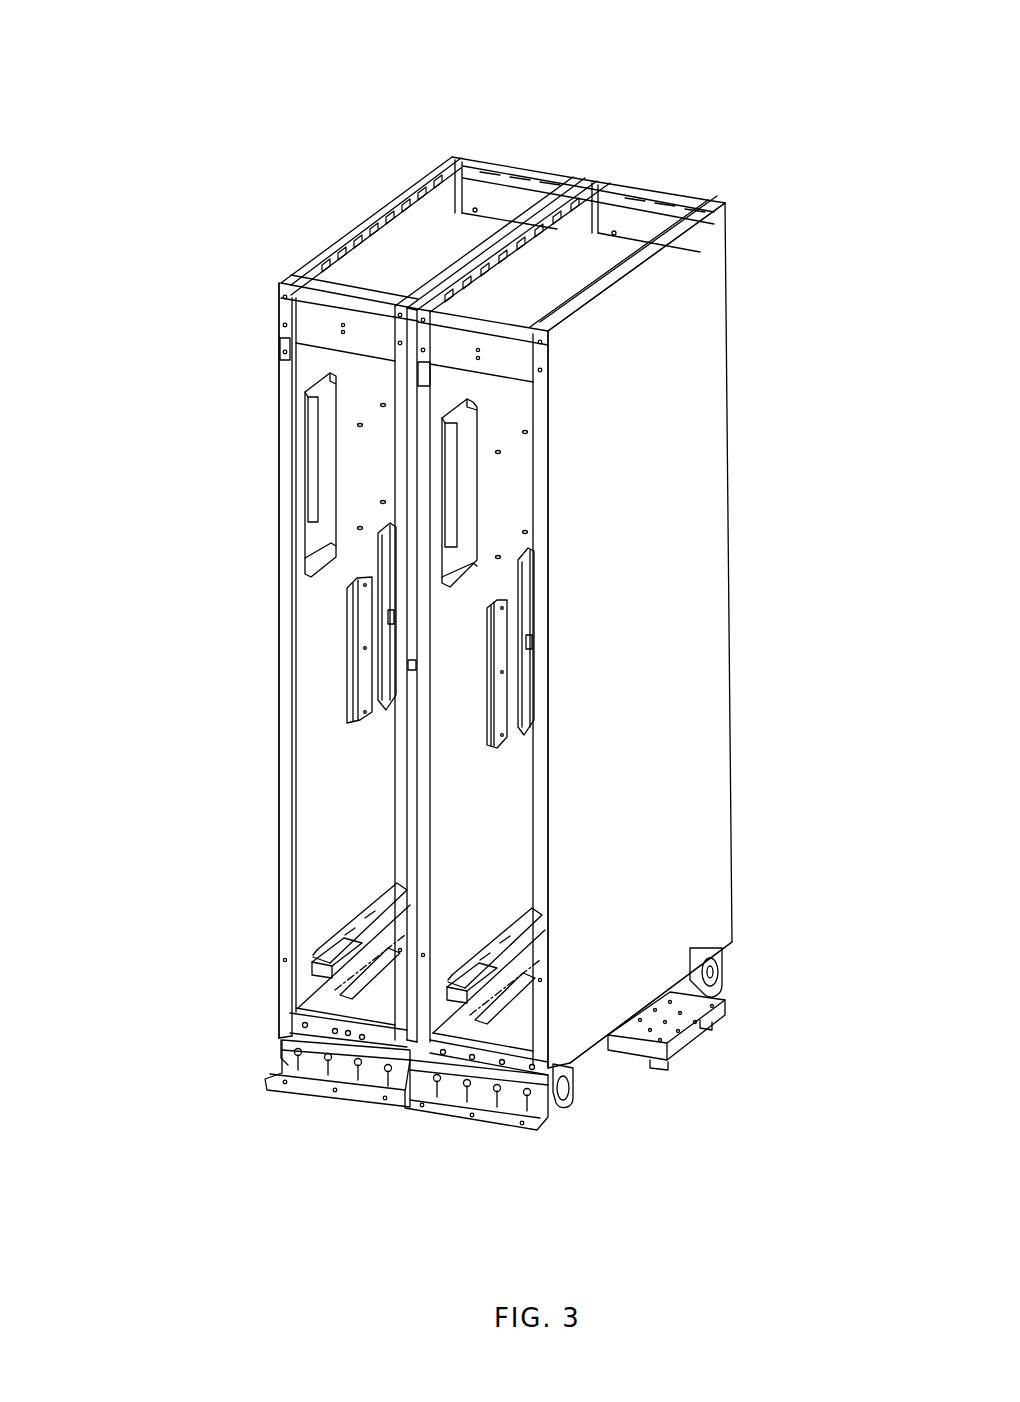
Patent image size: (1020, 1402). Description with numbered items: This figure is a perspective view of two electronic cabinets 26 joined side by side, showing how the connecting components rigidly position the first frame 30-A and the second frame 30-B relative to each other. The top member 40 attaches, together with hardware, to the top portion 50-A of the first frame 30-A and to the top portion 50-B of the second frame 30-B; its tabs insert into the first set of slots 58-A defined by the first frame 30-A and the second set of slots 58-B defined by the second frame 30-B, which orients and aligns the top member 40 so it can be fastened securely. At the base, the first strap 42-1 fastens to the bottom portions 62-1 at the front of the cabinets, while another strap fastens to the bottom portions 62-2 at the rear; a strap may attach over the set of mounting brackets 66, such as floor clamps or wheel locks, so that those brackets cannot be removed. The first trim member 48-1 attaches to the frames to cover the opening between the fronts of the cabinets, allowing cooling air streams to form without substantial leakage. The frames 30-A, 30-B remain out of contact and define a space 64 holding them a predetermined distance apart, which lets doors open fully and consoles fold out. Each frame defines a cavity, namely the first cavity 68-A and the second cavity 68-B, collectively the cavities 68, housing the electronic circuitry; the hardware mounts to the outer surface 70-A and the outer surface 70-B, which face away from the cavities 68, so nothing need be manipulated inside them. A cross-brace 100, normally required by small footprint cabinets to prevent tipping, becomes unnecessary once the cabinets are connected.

The equipment cabinet 26 is at (748, 152).
The first frame 30-A is at (500, 125).
The second frame 30-B is at (683, 130).
The top member 40 is at (485, 232).
The first strap 42-1 is at (330, 1062).
The first trim member 48-1 is at (392, 766).
The top portion of the first frame 50-A is at (472, 175).
The top portion of the second frame 50-B is at (597, 178).
The first set of slots 58-A is at (395, 278).
The second set of slots 58-B is at (490, 305).
The bottom portions of the front of the cabinets 62-1 is at (258, 985).
The bottom portions of the rear of the cabinets 62-2 is at (756, 940).
The space 64 is at (426, 1050).
The mounting brackets 66 is at (486, 1153).
The cavities 68 is at (248, 800).
The first cavity 68-A is at (325, 815).
The second cavity 68-B is at (512, 820).
The outer surface of the first frame 70-A is at (243, 1025).
The outer surface of the second frame 70-B is at (582, 1075).
The cross-brace 100 is at (712, 1023).